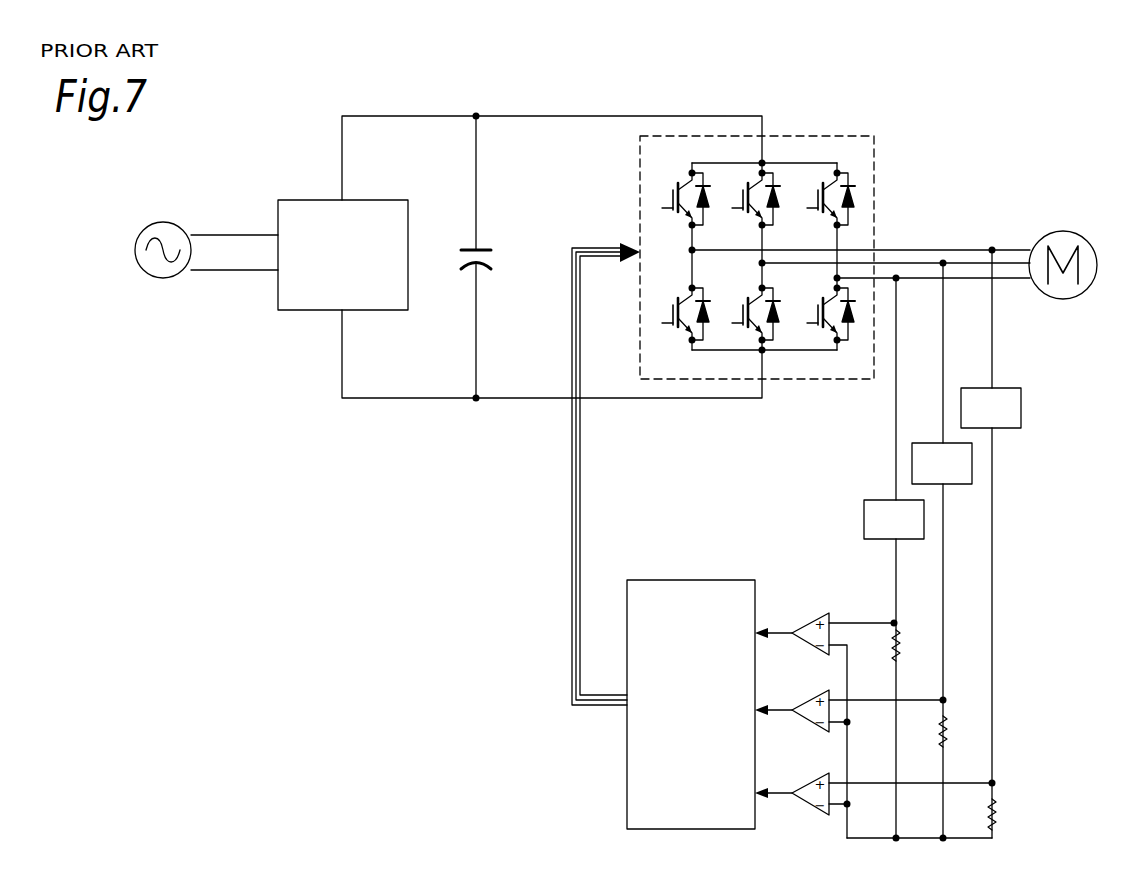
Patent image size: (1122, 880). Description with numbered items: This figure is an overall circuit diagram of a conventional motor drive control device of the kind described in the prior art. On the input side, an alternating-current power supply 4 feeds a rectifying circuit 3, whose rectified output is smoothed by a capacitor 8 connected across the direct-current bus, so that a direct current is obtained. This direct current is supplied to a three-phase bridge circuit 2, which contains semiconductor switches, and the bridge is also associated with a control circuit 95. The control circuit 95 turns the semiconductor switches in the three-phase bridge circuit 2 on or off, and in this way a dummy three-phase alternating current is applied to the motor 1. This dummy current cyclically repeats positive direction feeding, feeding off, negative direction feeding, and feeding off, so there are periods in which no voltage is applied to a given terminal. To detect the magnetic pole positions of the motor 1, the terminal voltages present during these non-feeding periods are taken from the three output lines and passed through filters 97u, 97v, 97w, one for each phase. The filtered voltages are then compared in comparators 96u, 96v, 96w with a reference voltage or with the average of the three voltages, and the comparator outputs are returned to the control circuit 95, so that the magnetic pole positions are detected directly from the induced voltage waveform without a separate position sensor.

The motor 1 is at (1062, 231).
The three-phase bridge circuit 2 is at (874, 135).
The rectifying circuit 3 is at (302, 199).
The alternating-current power supply 4 is at (163, 221).
The capacitor 8 is at (466, 248).
The control circuit 95 is at (697, 580).
The comparator 96u is at (812, 622).
The comparator 96v is at (812, 699).
The comparator 96w is at (812, 781).
The filter 97u is at (864, 520).
The filter 97v is at (912, 465).
The filter 97w is at (1021, 404).